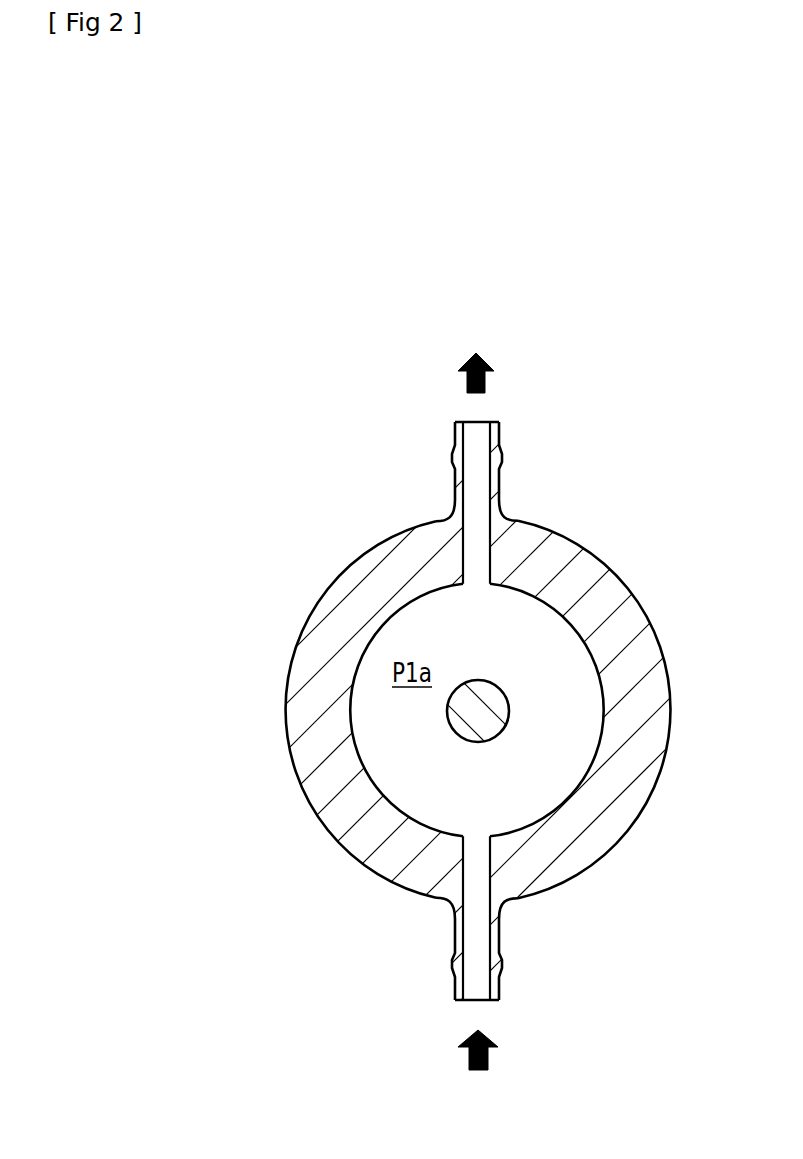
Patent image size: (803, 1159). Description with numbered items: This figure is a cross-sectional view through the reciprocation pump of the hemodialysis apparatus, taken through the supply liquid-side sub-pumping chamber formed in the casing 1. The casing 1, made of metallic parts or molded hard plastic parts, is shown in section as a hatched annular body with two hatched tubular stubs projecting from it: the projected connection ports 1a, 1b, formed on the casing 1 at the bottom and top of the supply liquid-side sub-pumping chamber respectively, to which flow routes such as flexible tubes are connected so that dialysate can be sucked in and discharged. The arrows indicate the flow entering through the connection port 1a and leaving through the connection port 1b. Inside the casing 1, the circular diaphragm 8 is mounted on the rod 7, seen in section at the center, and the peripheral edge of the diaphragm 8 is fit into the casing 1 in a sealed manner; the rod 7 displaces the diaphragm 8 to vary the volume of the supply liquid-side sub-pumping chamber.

The casing 1 is at (302, 628).
The connection port 1a is at (455, 947).
The connection port 1b is at (452, 472).
The rod 7 is at (506, 725).
The diaphragm 8 is at (573, 687).